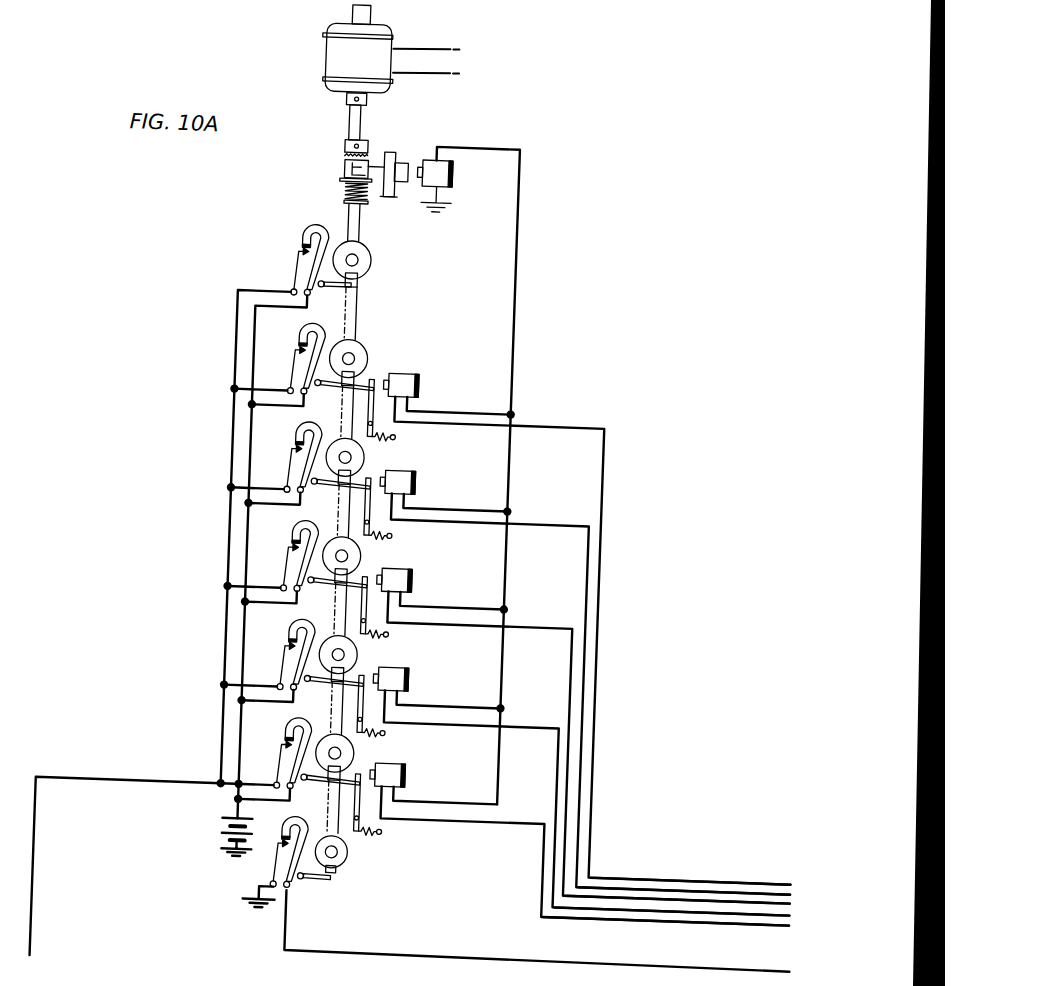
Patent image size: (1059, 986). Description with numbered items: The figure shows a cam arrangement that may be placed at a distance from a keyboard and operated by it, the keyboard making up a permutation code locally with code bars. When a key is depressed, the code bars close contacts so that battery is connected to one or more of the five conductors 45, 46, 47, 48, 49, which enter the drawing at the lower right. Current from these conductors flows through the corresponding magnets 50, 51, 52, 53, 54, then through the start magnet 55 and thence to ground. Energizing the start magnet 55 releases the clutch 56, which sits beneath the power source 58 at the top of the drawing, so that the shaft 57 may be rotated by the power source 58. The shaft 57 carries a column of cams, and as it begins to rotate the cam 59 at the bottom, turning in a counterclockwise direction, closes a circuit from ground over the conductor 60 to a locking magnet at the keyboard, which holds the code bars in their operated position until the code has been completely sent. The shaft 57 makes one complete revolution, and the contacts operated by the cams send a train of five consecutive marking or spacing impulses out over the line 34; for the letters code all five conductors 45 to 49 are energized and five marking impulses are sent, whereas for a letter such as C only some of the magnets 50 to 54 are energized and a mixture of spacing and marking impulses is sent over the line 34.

The line 34 is at (56, 853).
The conductor 45 is at (639, 860).
The conductor 46 is at (650, 877).
The conductor 47 is at (672, 887).
The conductor 48 is at (696, 898).
The conductor 49 is at (721, 909).
The magnet 50 is at (412, 378).
The magnet 51 is at (412, 476).
The magnet 52 is at (409, 573).
The magnet 53 is at (410, 673).
The magnet 54 is at (408, 769).
The start magnet 55 is at (454, 166).
The clutch 56 is at (342, 168).
The shaft 57 is at (356, 308).
The power source 58 is at (333, 50).
The cam 59 is at (370, 861).
The conductor 60 is at (450, 952).